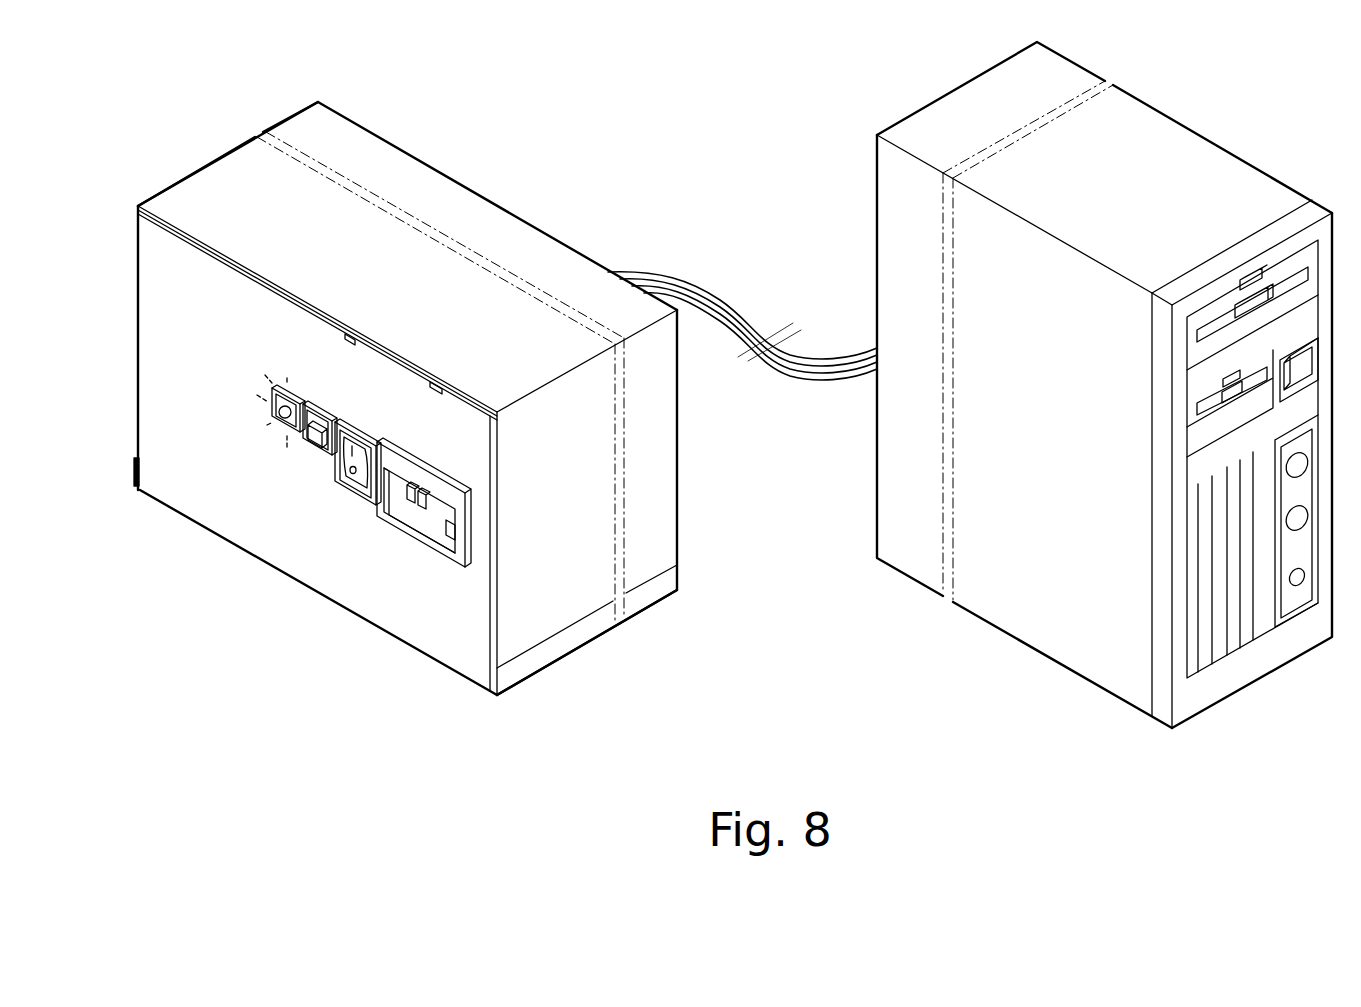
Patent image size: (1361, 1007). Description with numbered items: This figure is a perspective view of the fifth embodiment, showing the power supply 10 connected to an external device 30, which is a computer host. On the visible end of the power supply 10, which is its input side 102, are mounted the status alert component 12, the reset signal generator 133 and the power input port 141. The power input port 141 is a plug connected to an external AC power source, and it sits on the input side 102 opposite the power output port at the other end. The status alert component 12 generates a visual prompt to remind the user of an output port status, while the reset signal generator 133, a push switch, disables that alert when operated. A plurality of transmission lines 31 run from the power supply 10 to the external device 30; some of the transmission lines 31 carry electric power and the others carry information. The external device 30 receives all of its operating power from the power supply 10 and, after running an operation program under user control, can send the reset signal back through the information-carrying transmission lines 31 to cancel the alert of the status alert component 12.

The power supply 10 is at (405, 420).
The input side 102 is at (560, 657).
The status alert component 12 is at (284, 428).
The reset signal generator 133 is at (313, 444).
The power input port 141 is at (437, 533).
The transmission lines 31 is at (694, 286).
The external device 30 is at (996, 628).